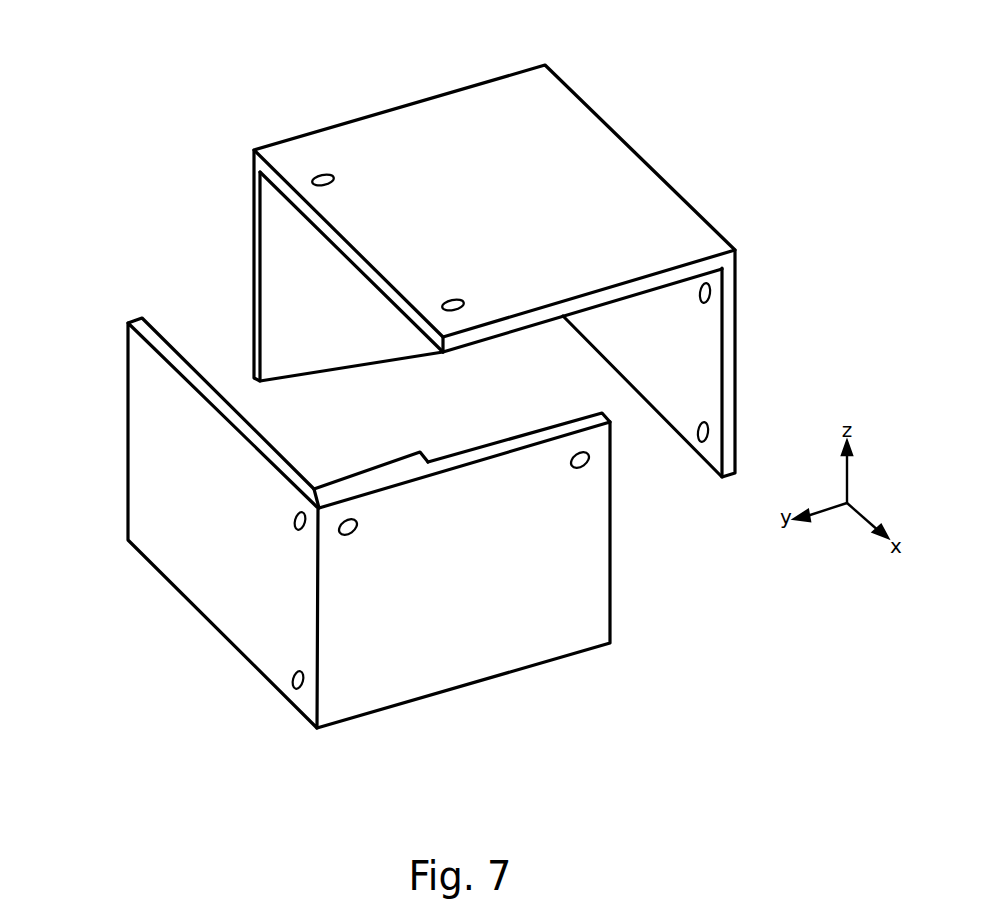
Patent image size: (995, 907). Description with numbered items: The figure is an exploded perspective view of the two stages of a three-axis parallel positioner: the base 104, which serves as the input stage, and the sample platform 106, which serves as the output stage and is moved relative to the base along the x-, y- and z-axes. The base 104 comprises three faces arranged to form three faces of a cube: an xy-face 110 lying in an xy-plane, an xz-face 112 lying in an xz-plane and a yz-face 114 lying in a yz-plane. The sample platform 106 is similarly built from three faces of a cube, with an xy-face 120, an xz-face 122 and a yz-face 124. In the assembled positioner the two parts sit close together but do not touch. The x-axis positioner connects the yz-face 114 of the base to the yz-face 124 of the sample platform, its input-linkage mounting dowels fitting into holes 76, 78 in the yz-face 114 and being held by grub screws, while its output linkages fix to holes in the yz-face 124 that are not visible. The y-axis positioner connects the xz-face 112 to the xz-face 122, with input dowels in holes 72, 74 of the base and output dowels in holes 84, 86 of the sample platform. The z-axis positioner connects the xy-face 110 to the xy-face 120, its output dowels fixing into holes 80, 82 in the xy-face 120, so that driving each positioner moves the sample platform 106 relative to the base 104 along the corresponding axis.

The hole 72 is at (292, 688).
The hole 74 is at (294, 528).
The hole 76 is at (358, 530).
The hole 78 is at (591, 463).
The hole 80 is at (334, 179).
The hole 82 is at (464, 305).
The hole 84 is at (709, 432).
The hole 86 is at (711, 293).
The base 104 is at (349, 541).
The sample platform 106 is at (496, 241).
The xy-face 110 is at (350, 481).
The xz-face 112 is at (145, 395).
The yz-face 114 is at (395, 690).
The xy-face 120 is at (490, 88).
The xz-face 122 is at (723, 372).
The yz-face 124 is at (285, 250).